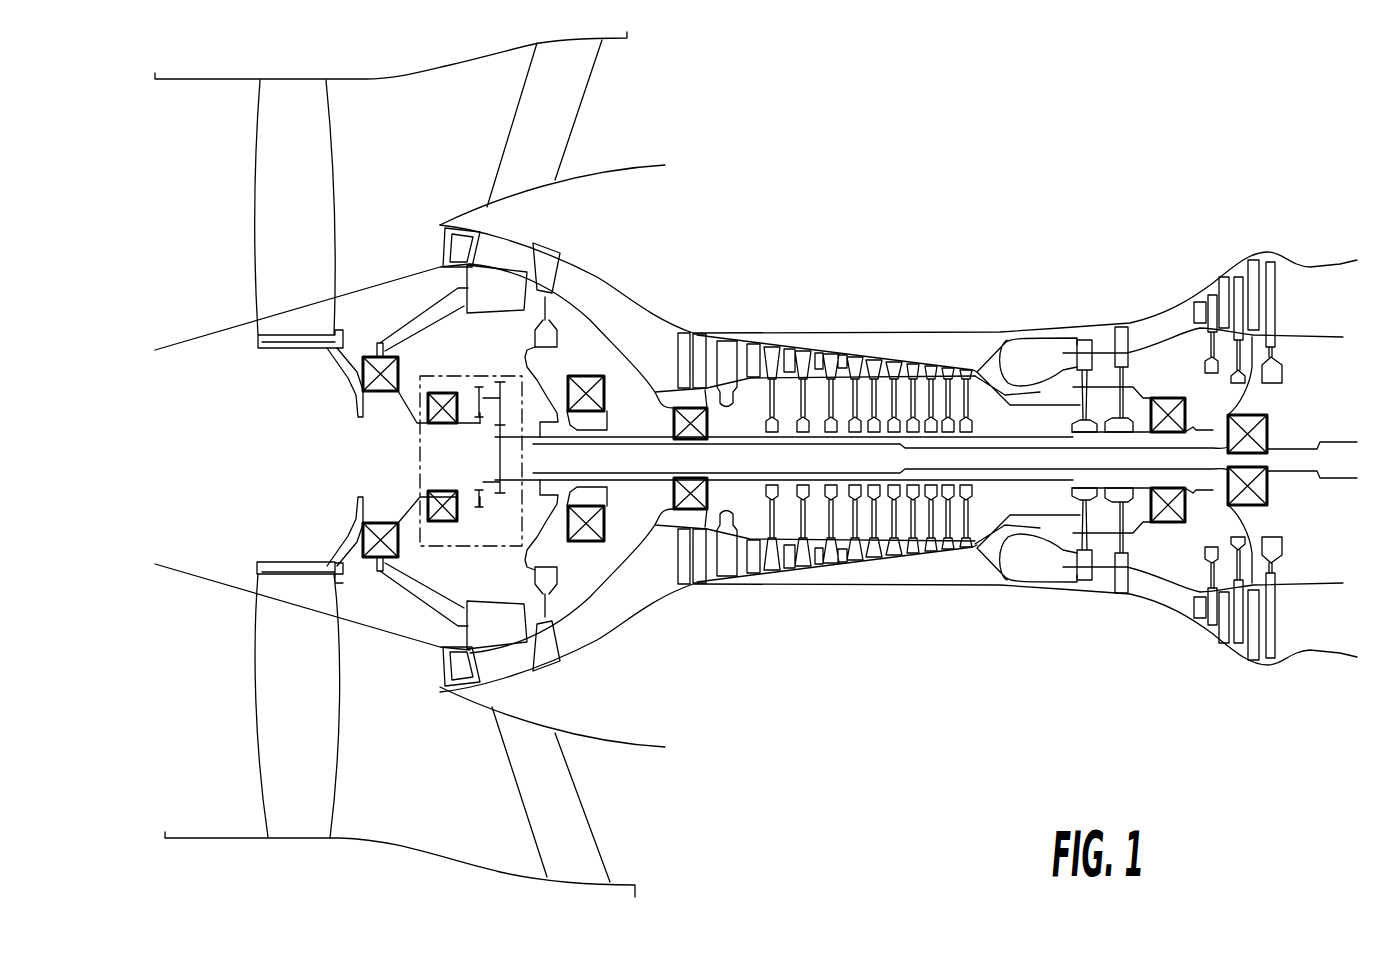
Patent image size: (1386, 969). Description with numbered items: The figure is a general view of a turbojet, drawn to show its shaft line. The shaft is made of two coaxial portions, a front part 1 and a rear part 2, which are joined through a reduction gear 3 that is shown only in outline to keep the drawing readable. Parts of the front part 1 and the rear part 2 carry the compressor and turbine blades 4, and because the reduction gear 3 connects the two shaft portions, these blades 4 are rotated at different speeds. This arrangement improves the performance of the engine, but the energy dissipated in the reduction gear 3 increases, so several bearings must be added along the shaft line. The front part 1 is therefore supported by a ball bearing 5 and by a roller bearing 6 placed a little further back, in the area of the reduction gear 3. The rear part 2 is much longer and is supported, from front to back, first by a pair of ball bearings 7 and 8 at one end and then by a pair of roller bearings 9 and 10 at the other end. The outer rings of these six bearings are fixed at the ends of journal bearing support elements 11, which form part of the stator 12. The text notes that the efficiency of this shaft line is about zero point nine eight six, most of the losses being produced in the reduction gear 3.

The front part of the shaft 1 is at (348, 422).
The rear part of the shaft 2 is at (626, 543).
The reduction gear 3 is at (498, 427).
The compressor and turbine blades 4 is at (268, 182).
The ball bearing 5 is at (363, 369).
The roller bearing 6 is at (428, 497).
The ball bearing 7 is at (607, 392).
The ball bearing 8 is at (662, 395).
The roller bearing 9 is at (1170, 397).
The roller bearing 10 is at (1257, 435).
The journal bearing support elements 11 is at (417, 313).
The stator 12 is at (670, 191).